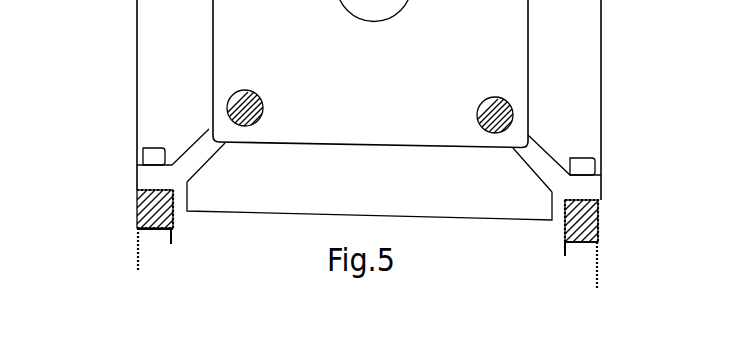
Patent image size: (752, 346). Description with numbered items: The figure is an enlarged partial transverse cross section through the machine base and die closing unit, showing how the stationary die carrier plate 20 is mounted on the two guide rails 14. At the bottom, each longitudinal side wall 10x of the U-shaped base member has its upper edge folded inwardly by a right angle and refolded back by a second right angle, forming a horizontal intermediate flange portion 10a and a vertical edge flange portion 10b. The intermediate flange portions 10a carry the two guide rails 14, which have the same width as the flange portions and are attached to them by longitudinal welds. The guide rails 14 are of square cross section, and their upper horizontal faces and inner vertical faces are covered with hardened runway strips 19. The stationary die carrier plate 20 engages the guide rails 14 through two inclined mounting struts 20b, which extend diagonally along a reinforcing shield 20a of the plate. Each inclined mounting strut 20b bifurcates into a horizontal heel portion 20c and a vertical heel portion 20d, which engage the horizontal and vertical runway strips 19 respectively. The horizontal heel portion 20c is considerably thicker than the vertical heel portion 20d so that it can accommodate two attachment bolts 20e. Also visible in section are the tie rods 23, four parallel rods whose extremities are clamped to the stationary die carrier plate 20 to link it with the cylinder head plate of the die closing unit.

The stationary die carrier plate 20 is at (136, 61).
The reinforcing shield 20a is at (592, 50).
The inclined mounting struts 20b is at (200, 157).
The horizontal heel portion 20c is at (152, 176).
The vertical heel portion 20d is at (180, 202).
The attachment bolts 20e is at (148, 158).
The tie rods 23 is at (505, 110).
The runway strips 19 is at (585, 200).
The guide rails 14 is at (590, 220).
The intermediate flange portions 10a is at (585, 243).
The edge flange portions 10b is at (565, 247).
The side walls 10x is at (598, 255).